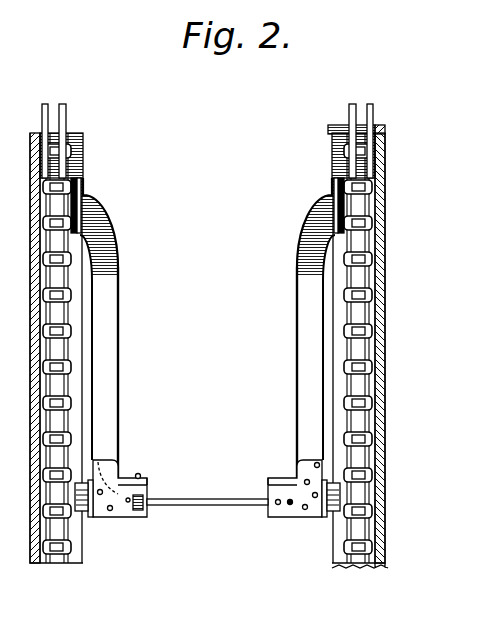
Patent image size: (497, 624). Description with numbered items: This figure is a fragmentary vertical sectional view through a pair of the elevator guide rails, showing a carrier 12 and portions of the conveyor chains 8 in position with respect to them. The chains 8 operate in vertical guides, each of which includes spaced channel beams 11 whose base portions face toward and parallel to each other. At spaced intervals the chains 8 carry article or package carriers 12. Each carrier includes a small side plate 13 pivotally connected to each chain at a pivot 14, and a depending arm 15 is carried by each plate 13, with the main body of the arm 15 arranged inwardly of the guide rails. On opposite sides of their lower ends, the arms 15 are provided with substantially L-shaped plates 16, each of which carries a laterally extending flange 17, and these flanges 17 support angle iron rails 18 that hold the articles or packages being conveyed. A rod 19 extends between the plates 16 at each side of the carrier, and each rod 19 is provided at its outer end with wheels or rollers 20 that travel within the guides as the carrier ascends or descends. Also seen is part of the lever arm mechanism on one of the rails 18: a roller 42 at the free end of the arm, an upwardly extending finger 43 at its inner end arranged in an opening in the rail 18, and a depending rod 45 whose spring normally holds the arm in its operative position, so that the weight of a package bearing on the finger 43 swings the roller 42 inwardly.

The chain 8 is at (66, 113).
The channel beam 11 is at (33, 140).
The carrier 12 is at (128, 261).
The side plate 13 is at (85, 167).
The pivotal connection 14 is at (83, 187).
The depending arm 15 is at (120, 332).
The L-shaped plate 16 is at (291, 508).
The flange 17 is at (268, 491).
The angle iron rail 18 is at (122, 463).
The rod 19 is at (180, 496).
The roller 20 is at (91, 516).
The roller 42 is at (120, 447).
The finger 43 is at (141, 475).
The depending rod 45 is at (140, 518).